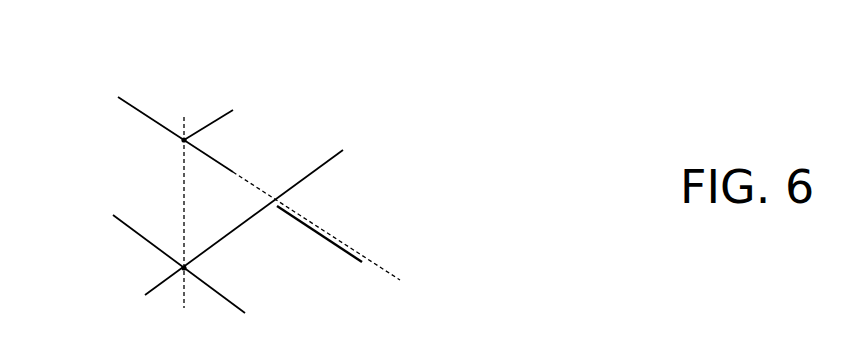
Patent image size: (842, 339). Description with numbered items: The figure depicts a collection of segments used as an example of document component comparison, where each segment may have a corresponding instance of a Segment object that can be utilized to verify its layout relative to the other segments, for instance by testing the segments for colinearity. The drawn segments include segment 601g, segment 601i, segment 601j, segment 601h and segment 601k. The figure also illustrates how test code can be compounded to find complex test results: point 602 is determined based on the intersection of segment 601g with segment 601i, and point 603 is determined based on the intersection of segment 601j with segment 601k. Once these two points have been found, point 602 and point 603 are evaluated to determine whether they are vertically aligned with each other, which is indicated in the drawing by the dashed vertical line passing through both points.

The segment 601g is at (128, 103).
The segment 601i is at (228, 113).
The segment 601j is at (323, 164).
The segment 601h is at (313, 230).
The segment 601k is at (120, 220).
The point 602 is at (182, 141).
The point 603 is at (180, 267).